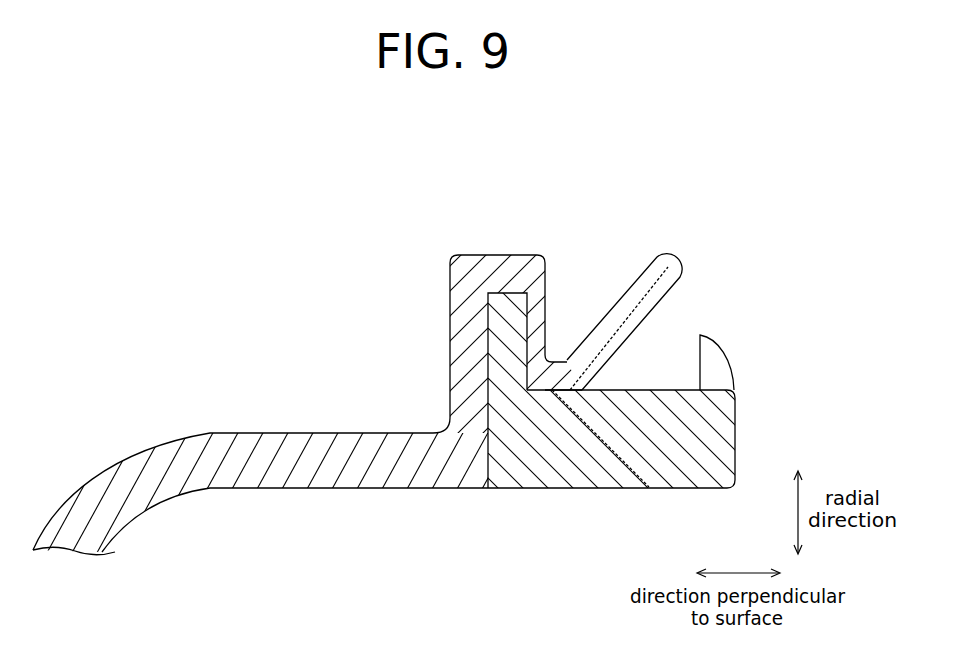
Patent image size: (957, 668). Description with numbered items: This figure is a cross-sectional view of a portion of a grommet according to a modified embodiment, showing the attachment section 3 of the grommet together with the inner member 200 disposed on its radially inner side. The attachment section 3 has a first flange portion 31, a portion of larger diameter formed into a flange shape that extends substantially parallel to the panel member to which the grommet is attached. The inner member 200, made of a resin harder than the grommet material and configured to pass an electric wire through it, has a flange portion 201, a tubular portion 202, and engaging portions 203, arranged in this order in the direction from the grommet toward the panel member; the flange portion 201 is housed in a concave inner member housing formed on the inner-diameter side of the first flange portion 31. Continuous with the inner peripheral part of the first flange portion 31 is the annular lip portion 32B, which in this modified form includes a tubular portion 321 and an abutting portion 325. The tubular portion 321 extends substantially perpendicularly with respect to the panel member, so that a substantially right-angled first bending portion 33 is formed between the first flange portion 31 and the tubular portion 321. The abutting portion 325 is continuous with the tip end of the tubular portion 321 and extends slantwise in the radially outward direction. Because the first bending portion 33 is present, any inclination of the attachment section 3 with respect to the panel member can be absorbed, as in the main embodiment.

The attachment section 3 is at (279, 433).
The first flange portion 31 is at (500, 268).
The first bending portion 33 is at (549, 360).
The annular lip portion 32B is at (603, 280).
The abutting portion 325 is at (660, 262).
The flange portion 201 is at (497, 340).
The tubular portion 202 is at (618, 450).
The inner member 200 is at (724, 472).
The tubular portion 321 is at (560, 370).
The engaging portions 203 is at (716, 364).